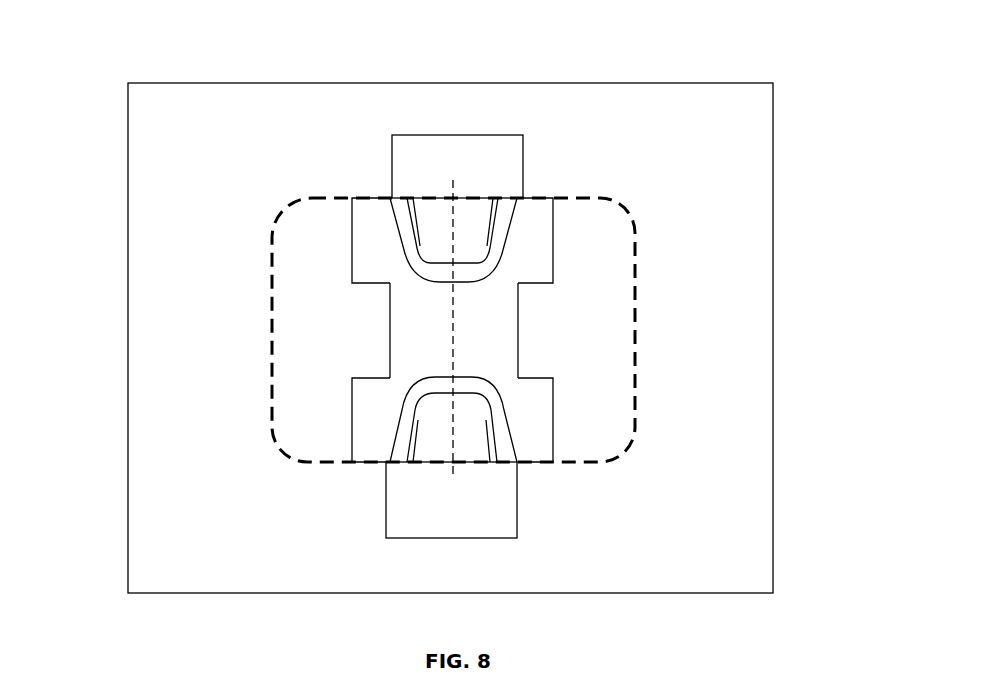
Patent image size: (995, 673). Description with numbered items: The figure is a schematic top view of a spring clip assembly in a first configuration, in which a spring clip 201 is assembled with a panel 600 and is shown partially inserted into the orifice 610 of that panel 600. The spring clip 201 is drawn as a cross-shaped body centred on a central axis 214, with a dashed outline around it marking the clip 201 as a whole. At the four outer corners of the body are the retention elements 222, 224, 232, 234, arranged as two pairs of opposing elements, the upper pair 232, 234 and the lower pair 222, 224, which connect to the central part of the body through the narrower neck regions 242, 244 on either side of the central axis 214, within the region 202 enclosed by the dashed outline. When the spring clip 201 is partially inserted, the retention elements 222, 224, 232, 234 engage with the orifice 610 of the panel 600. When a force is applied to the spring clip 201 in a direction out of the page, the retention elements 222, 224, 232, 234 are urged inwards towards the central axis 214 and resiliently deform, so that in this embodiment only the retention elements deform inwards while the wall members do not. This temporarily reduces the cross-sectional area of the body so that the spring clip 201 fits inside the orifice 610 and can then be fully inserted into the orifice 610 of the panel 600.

The panel 600 is at (812, 92).
The spring clip 201 is at (286, 160).
The central axis 214 is at (453, 190).
The retention element 232 is at (363, 227).
The retention element 234 is at (540, 227).
The left neck 242 is at (388, 310).
The right neck 244 is at (518, 316).
The retention element 222 is at (362, 412).
The retention element 224 is at (533, 413).
The body 202 is at (300, 348).
The orifice 610 is at (497, 503).